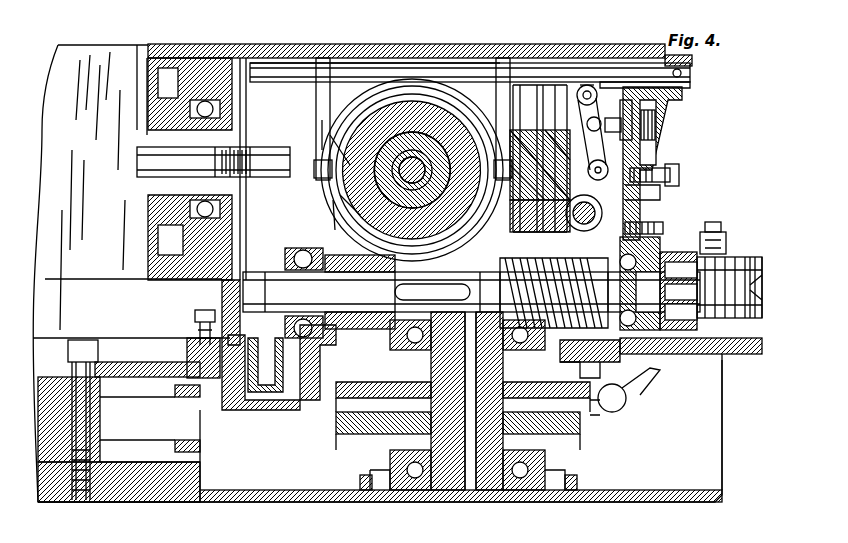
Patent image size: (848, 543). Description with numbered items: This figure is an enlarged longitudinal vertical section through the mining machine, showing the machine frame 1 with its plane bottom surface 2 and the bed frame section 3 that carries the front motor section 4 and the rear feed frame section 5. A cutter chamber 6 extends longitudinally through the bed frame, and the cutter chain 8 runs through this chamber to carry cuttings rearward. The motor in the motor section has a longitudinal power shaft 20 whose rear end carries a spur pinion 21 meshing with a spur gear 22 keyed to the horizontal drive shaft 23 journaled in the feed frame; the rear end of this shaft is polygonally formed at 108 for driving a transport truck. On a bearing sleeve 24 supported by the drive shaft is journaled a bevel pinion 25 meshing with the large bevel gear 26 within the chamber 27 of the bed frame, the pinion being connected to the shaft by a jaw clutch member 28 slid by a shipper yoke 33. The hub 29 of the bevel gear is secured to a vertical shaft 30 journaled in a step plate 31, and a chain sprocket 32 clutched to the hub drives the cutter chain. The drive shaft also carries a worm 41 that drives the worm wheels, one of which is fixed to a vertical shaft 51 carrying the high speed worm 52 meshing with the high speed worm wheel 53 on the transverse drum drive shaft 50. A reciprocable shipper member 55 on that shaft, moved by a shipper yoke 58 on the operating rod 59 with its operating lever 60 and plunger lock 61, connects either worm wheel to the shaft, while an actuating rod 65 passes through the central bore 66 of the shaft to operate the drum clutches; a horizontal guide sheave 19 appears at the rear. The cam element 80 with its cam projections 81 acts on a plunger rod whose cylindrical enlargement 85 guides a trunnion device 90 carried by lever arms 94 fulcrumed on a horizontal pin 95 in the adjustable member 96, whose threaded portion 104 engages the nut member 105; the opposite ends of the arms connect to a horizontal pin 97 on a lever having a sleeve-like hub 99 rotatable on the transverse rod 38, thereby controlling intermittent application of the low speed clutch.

The machine frame 1 is at (190, 46).
The plane bottom surface 2 is at (186, 503).
The bed frame section 3 is at (722, 420).
The front motor section 4 is at (72, 108).
The rear feed frame section 5 is at (456, 522).
The cutter chamber 6 is at (615, 385).
The cutter chain 8 is at (600, 418).
The horizontal guide sheave 19 is at (762, 266).
The power shaft 20 is at (148, 152).
The spur pinion 21 is at (270, 130).
The spur gear 22 is at (260, 404).
The drive shaft 23 is at (243, 292).
The bearing sleeve 24 is at (330, 228).
The bevel pinion 25 is at (315, 345).
The bevel gear 26 is at (622, 378).
The chamber 27 is at (318, 385).
The jaw clutch member 28 is at (465, 318).
The hub 29 is at (410, 404).
The vertical shaft 30 is at (433, 500).
The step plate 31 is at (545, 462).
The chain sprocket 32 is at (378, 436).
The shipper yoke 33 is at (522, 256).
The horizontal rod 38 is at (602, 215).
The worm 41 is at (612, 268).
The drum drive shaft 50 is at (385, 125).
The vertical shaft 51 is at (520, 215).
The high speed worm 52 is at (578, 205).
The high speed worm wheel 53 is at (500, 55).
The shipper member 55 is at (392, 132).
The shipper yoke 58 is at (322, 126).
The operating rod 59 is at (478, 100).
The operating lever 60 is at (674, 122).
The plunger lock 61 is at (678, 175).
The actuating rod 65 is at (335, 190).
The central bore 66 is at (355, 145).
The cam element 80 is at (343, 205).
The cam projections 81 is at (332, 146).
The cylindrical enlargement 85 is at (594, 132).
The trunnion device 90 is at (658, 198).
The lever arms 94 is at (660, 150).
The horizontal pin 95 is at (612, 128).
The adjustable member 96 is at (630, 105).
The horizontal pin 97 is at (590, 85).
The sleeve-like hub 99 is at (662, 225).
The threaded portion 104 is at (692, 72).
The nut member 105 is at (692, 88).
The polygonal end 108 is at (730, 252).